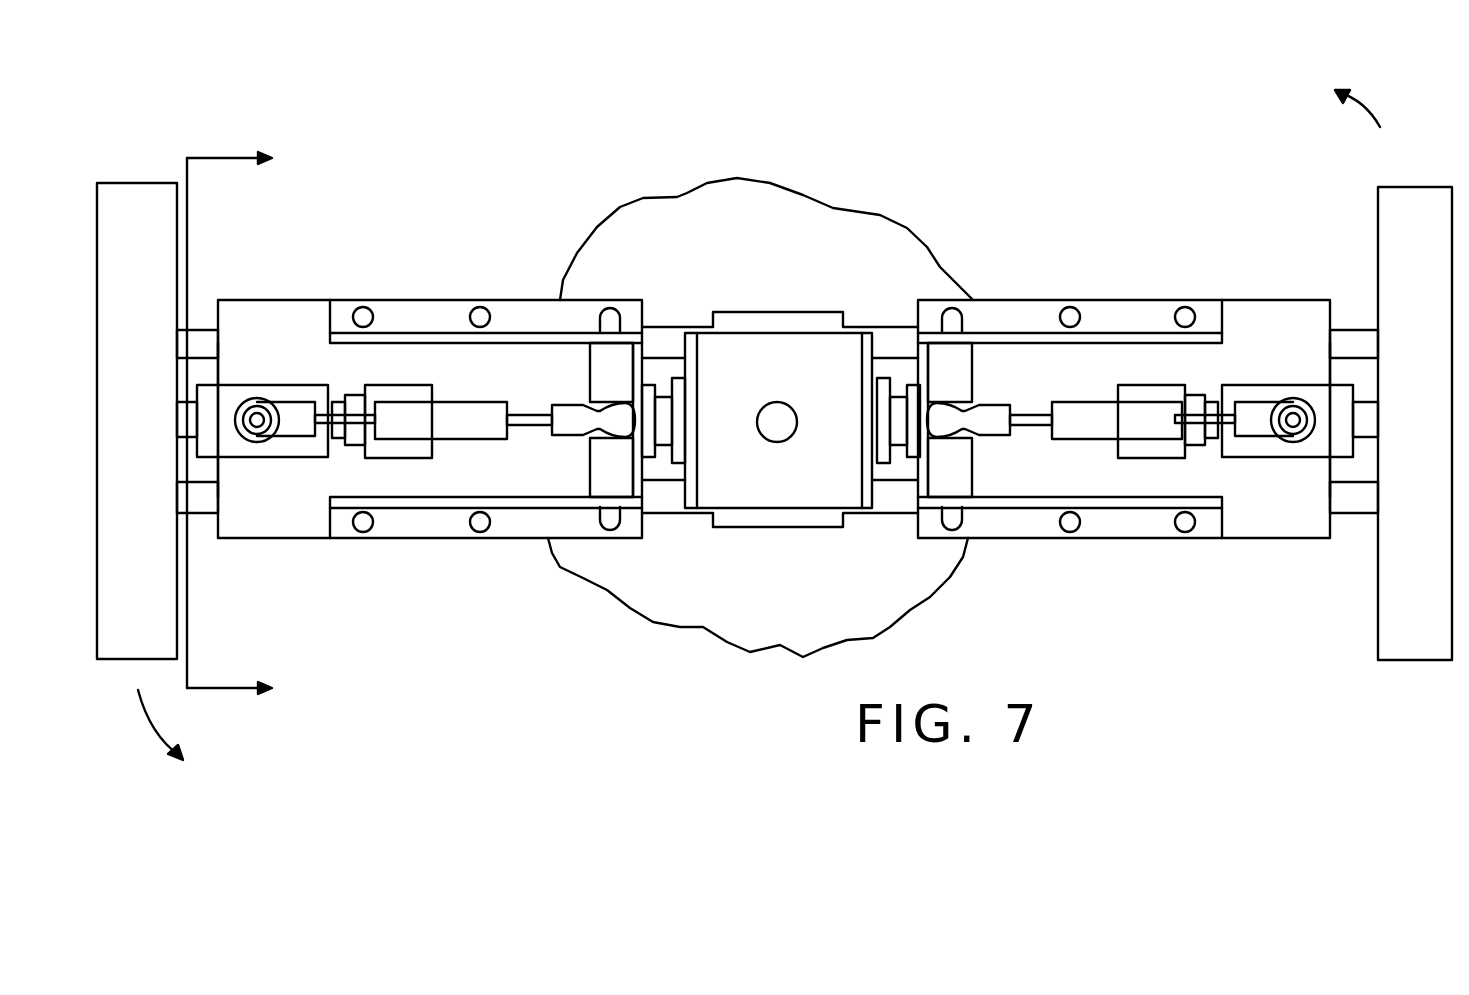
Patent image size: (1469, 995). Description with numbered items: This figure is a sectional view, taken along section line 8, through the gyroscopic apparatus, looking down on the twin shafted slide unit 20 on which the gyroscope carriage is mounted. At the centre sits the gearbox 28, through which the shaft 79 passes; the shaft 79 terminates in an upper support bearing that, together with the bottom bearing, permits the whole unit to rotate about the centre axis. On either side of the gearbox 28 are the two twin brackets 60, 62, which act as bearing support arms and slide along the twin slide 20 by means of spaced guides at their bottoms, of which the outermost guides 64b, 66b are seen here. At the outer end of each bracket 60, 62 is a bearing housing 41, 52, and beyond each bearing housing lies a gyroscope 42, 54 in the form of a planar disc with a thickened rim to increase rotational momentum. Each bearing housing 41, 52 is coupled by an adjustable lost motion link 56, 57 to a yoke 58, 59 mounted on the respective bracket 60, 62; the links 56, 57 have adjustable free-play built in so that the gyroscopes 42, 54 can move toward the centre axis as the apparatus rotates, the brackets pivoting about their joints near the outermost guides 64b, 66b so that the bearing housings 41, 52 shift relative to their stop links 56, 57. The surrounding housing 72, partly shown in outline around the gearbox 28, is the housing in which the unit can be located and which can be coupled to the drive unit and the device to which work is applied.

The section line 8- 8 is at (242, 426).
The twin shafted slide unit 20 is at (202, 327).
The gearbox 28 is at (753, 299).
The bearing housing 41 is at (270, 400).
The gyroscope 42 is at (110, 230).
The bearing housing 52 is at (1258, 402).
The gyroscope 54 is at (1433, 187).
The adjustable lost motion link 56 is at (492, 403).
The adjustable lost motion link 57 is at (1095, 406).
The yoke 58 is at (596, 424).
The yoke 59 is at (968, 424).
The twin bracket 60 is at (447, 318).
The twin bracket 62 is at (996, 312).
The outermost guide 64b is at (298, 513).
The outermost guide 66b is at (1245, 527).
The housing 72 is at (865, 225).
The shaft 79 is at (768, 445).